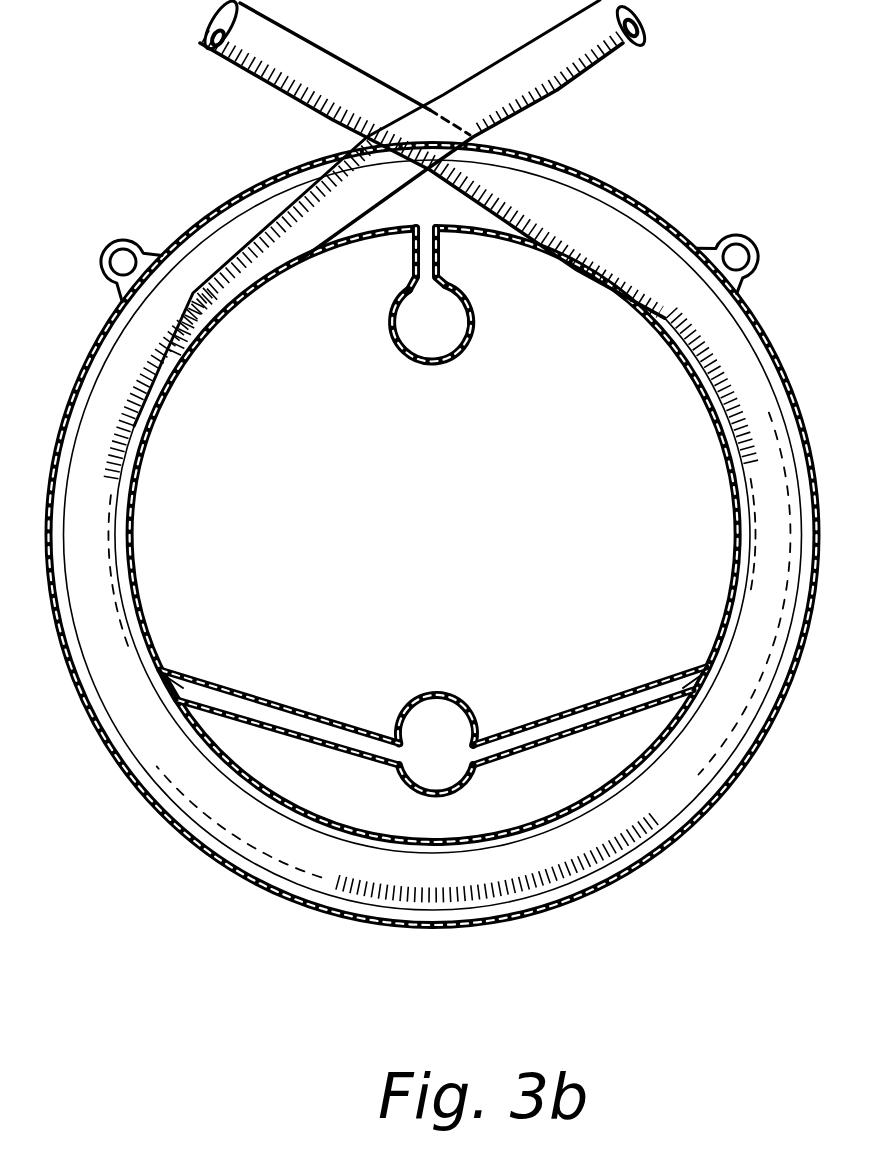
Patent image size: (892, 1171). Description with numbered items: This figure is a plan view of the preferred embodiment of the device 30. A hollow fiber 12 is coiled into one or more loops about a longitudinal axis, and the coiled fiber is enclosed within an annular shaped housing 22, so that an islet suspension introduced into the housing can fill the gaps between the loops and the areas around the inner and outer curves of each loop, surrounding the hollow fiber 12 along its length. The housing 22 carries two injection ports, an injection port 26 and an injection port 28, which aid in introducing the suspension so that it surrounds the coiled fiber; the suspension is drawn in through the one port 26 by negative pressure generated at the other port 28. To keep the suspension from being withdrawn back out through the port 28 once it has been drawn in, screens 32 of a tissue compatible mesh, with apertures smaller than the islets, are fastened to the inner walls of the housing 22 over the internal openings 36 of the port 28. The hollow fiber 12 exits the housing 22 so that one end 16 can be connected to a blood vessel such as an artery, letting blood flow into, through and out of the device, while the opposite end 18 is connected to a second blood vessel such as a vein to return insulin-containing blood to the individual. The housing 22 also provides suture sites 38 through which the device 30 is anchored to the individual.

The hollow fiber 12 is at (583, 80).
The end of hollow fiber 16 is at (640, 20).
The opposite end of hollow fiber 18 is at (213, 33).
The annular shaped housing 22 is at (57, 450).
The injection port 26 is at (468, 337).
The injection port 28 is at (449, 717).
The device 30 is at (635, 925).
The screens 32 is at (167, 680).
The internal openings 36 is at (163, 665).
The suture sites 38 is at (118, 248).